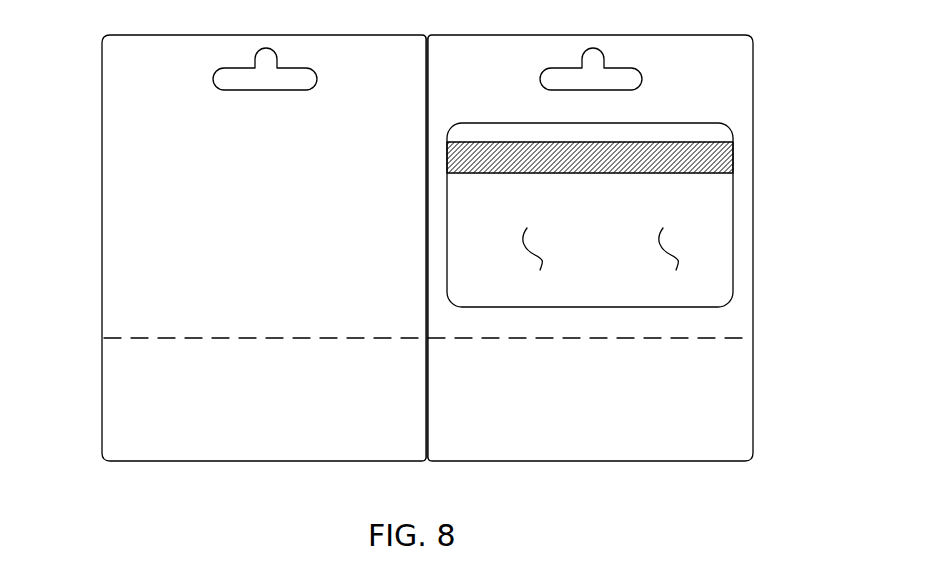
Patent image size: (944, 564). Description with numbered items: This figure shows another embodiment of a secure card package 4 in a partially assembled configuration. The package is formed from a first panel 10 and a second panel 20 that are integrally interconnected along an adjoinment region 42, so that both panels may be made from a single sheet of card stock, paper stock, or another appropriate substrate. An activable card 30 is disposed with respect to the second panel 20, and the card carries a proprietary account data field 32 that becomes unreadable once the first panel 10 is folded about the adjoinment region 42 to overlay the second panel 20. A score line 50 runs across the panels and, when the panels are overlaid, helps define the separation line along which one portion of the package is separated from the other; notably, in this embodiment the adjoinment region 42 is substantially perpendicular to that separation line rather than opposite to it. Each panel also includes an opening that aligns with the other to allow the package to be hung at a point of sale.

The secure card package 4 is at (768, 43).
The first panel 10 is at (130, 182).
The second panel 20 is at (725, 95).
The activable card 30 is at (712, 232).
The proprietary account data field 32 is at (715, 152).
The adjoinment region 42 is at (427, 185).
The score line 50 is at (255, 340).